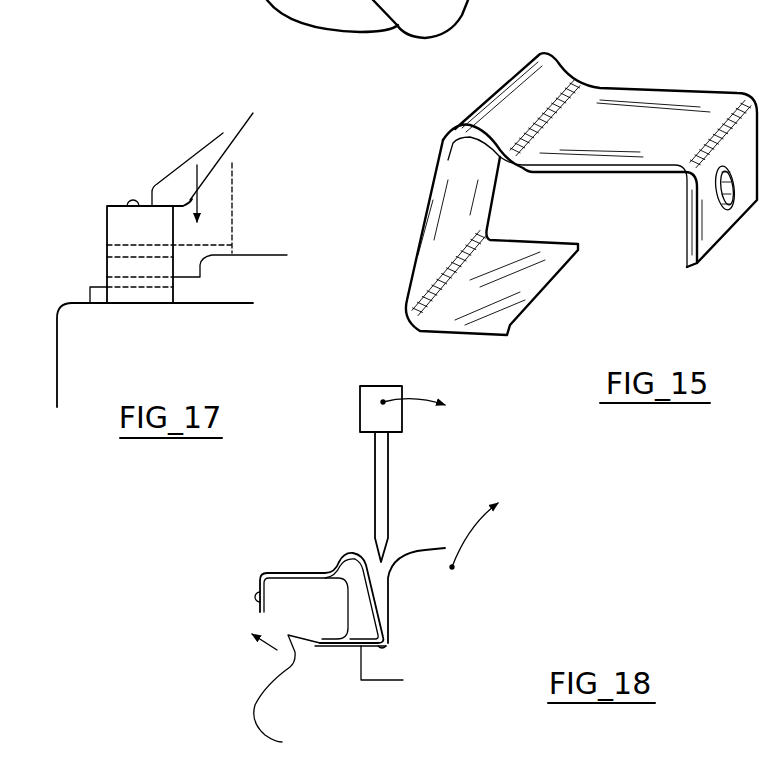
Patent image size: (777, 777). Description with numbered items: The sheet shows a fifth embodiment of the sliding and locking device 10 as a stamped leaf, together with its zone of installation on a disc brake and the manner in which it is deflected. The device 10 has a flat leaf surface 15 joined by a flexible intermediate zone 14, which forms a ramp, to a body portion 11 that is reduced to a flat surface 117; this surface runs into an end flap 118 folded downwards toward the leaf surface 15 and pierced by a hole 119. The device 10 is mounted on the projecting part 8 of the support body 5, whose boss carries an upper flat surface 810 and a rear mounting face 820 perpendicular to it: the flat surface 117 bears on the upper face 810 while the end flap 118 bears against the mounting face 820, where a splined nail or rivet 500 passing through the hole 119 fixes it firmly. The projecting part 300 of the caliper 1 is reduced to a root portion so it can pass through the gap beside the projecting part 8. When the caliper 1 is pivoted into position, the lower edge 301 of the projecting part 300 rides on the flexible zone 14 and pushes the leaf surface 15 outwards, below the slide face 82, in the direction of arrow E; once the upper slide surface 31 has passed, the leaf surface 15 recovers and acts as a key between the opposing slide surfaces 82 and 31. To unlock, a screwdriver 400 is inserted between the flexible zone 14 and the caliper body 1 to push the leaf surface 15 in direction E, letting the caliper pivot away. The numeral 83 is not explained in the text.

In FIG. 17, the caliper 1 is at (70, 333).
In FIG. 18, the caliper 1 is at (440, 547).
In FIG. 17, the support body 5 is at (258, 134).
In FIG. 18, the support body 5 is at (262, 614).
In FIG. 17, the projecting part 8 is at (197, 162).
In FIG. 18, the projecting part 8 is at (308, 598).
In FIG. 17, the sliding and locking device 10 is at (100, 218).
In FIG. 15, the sliding and locking device 10 is at (725, 87).
In FIG. 18, the sliding and locking device 10 is at (353, 540).
In FIG. 15, the body portion 11 is at (650, 180).
In FIG. 15, the intermediate zone 14 is at (430, 217).
In FIG. 18, the intermediate zone 14 is at (372, 588).
In FIG. 17, the flat leaf surface 15 is at (123, 253).
In FIG. 15, the flat leaf surface 15 is at (517, 283).
In FIG. 18, the flat leaf surface 15 is at (345, 647).
In FIG. 17, the upper slide surface 31 is at (100, 297).
In FIG. 18, the upper slide surface 31 is at (385, 645).
In FIG. 17, the slide face 82 is at (210, 268).
In FIG. 18, the slide face 82 is at (317, 643).
In FIG. 17, the tongue end 83 is at (190, 247).
In FIG. 15, the flat surface 117 is at (635, 105).
In FIG. 18, the flat surface 117 is at (275, 577).
In FIG. 15, the end flap 118 is at (698, 237).
In FIG. 18, the end flap 118 is at (257, 580).
In FIG. 15, the hole 119 is at (733, 203).
In FIG. 17, the projecting part 300 is at (97, 282).
In FIG. 18, the projecting part 300 is at (375, 663).
In FIG. 18, the lower edge 301 is at (361, 668).
In FIG. 18, the screwdriver 400 is at (400, 460).
In FIG. 17, the splined nail or rivet 500 is at (134, 201).
In FIG. 18, the splined nail or rivet 500 is at (280, 598).
In FIG. 18, the upper flat surface 810 is at (327, 577).
In FIG. 18, the mounting face 820 is at (315, 608).
In FIG. 18, the arrow E is at (275, 648).